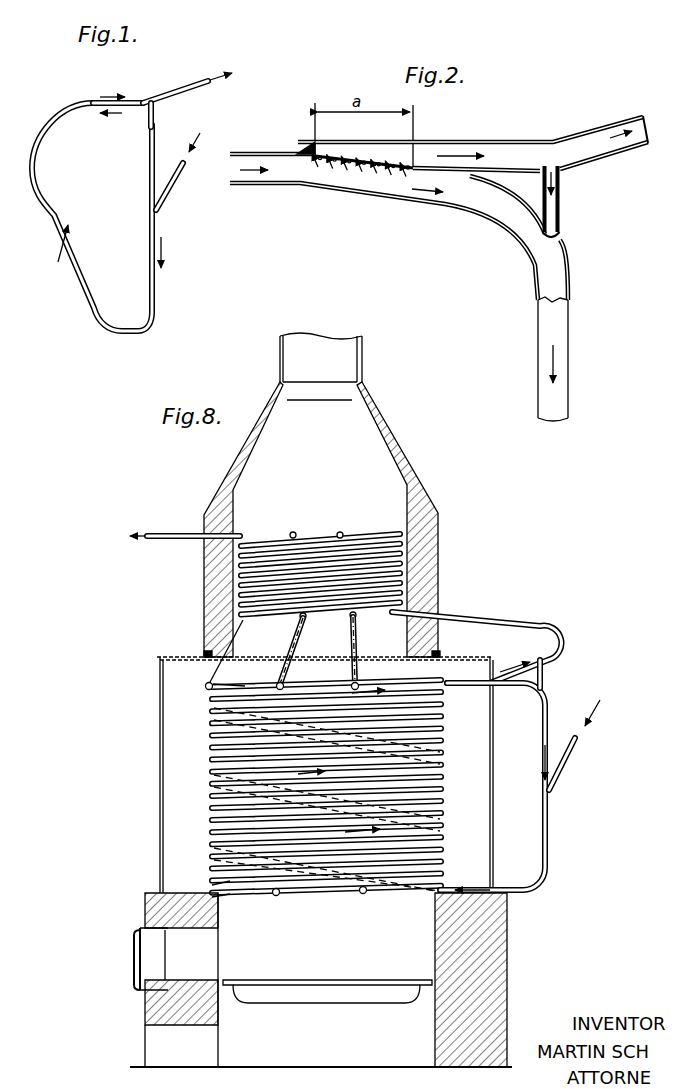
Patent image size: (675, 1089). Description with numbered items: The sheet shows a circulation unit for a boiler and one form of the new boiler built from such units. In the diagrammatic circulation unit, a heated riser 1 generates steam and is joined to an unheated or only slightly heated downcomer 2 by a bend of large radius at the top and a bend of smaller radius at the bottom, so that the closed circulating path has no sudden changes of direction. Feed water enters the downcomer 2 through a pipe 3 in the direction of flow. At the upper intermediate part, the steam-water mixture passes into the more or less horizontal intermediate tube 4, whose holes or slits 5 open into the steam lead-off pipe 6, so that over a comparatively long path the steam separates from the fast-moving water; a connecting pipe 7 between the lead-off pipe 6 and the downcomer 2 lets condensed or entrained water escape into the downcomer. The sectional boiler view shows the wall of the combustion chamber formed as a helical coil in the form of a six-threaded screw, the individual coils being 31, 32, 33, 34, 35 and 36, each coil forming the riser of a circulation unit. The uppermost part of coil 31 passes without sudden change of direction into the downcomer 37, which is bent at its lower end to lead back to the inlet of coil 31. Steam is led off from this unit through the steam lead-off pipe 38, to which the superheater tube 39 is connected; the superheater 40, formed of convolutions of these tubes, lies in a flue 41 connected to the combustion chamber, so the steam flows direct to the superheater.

In FIG. 1, the heated riser 1 is at (50, 211).
In FIG. 2, the heated riser 1 is at (387, 227).
In FIG. 1, the downcomer 2 is at (147, 183).
In FIG. 2, the downcomer 2 is at (537, 345).
In FIG. 1, the feed water pipe 3 is at (175, 187).
In FIG. 1, the intermediate tube 4 is at (83, 99).
In FIG. 2, the intermediate tube 4 is at (385, 186).
In FIG. 2, the holes or slits 5 is at (322, 166).
In FIG. 1, the steam lead-off pipe 6 is at (168, 94).
In FIG. 2, the steam lead-off pipe 6 is at (472, 143).
In FIG. 1, the connecting pipe 7 is at (155, 112).
In FIG. 2, the connecting pipe 7 is at (561, 207).
In FIG. 8, the coil 31 is at (438, 680).
In FIG. 8, the coil 32 is at (362, 895).
In FIG. 8, the coil 33 is at (275, 897).
In FIG. 8, the coil 34 is at (210, 893).
In FIG. 8, the coil 35 is at (208, 878).
In FIG. 8, the coil 36 is at (445, 832).
In FIG. 8, the downcomer 37 is at (549, 820).
In FIG. 8, the steam lead-off pipe 38 is at (548, 672).
In FIG. 8, the superheater tube 39 is at (512, 622).
In FIG. 8, the superheater 40 is at (406, 558).
In FIG. 8, the flue 41 is at (372, 512).